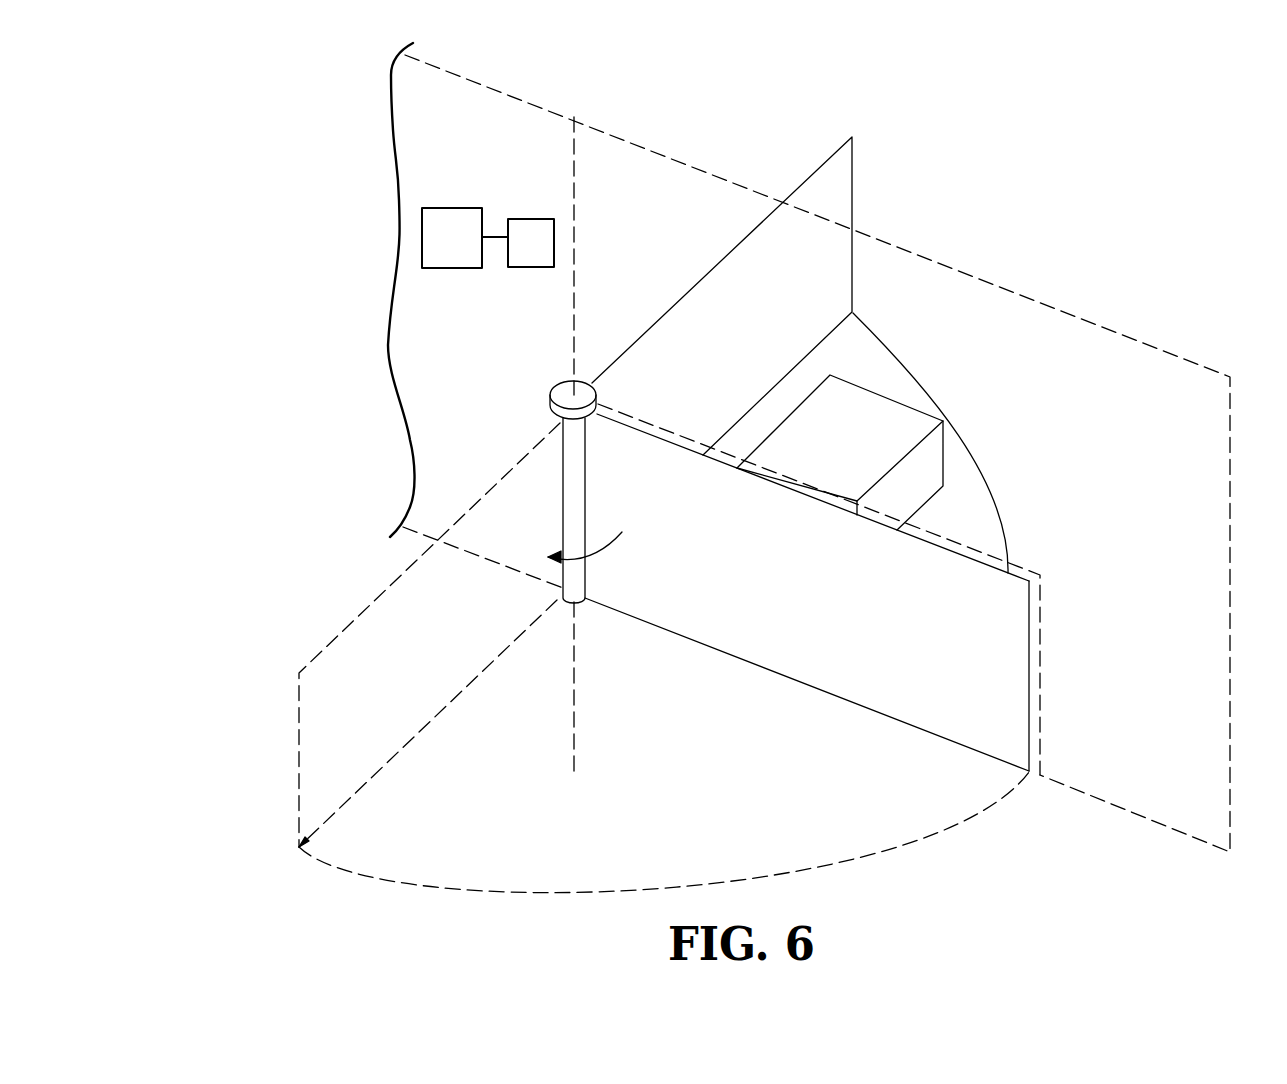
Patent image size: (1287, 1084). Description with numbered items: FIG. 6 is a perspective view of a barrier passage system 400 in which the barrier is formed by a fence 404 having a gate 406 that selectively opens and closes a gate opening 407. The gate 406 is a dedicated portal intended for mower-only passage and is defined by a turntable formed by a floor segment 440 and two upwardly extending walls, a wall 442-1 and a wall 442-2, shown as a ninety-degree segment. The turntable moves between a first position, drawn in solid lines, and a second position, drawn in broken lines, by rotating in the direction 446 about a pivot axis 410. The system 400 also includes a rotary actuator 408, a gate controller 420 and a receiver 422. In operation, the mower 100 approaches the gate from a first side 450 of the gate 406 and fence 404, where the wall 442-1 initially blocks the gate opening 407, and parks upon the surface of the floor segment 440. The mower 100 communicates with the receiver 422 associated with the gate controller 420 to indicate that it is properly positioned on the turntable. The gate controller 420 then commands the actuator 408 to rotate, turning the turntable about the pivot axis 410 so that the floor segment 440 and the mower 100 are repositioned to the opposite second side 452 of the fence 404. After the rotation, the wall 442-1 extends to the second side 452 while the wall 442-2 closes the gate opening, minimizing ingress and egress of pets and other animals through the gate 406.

The mower 100 is at (910, 399).
The barrier passage system 400 is at (1022, 190).
The fence 404 is at (1178, 383).
The gate 406 is at (958, 722).
The gate opening 407 is at (1029, 771).
The rotary actuator 408 is at (550, 393).
The pivot axis 410 is at (573, 627).
The gate controller 420 is at (530, 219).
The receiver 422 is at (422, 237).
The floor sector or segment 440 is at (863, 350).
The wall 442-1 is at (723, 630).
The wall 442-2 is at (770, 237).
The direction 446 is at (616, 545).
The first side 450 is at (1143, 258).
The second side 452 is at (285, 575).